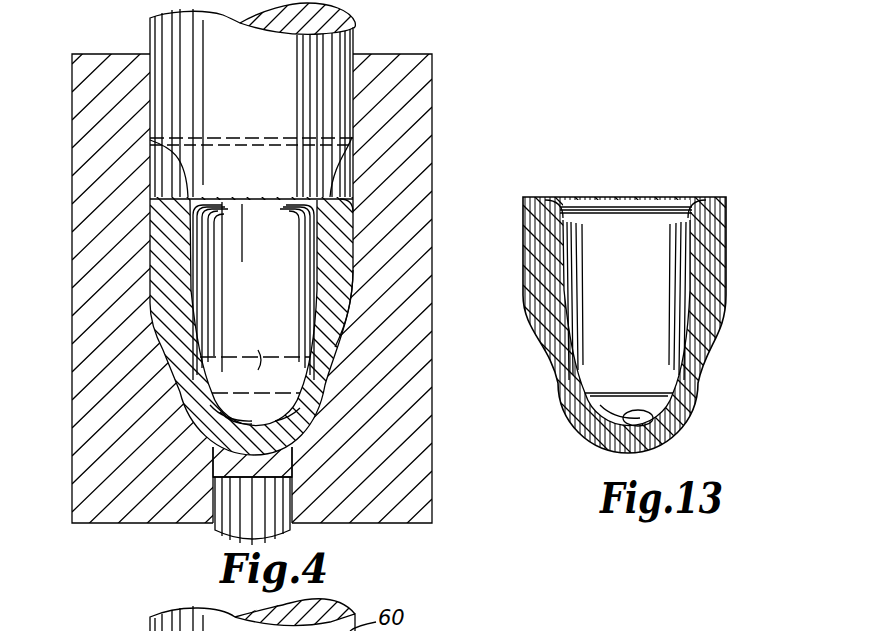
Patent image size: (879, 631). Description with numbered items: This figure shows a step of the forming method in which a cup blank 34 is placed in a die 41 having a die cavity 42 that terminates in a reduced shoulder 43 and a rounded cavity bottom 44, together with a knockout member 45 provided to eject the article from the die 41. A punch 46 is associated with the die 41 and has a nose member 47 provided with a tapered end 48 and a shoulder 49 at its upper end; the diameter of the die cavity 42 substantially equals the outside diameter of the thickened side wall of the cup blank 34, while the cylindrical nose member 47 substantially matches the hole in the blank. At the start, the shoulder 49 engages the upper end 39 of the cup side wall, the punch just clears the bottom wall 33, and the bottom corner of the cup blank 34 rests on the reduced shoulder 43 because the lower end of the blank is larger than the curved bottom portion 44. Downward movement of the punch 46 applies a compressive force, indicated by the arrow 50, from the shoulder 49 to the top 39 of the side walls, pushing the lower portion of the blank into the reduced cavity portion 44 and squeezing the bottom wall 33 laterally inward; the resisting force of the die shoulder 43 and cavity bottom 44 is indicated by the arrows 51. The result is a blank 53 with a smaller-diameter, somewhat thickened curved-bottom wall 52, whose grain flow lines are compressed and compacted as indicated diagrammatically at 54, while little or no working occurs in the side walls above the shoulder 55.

In FIG. 4, the bottom wall 33 is at (255, 371).
In FIG. 4, the cup blank 34 is at (343, 294).
In FIG. 4, the upper end of the cup side wall 39 is at (340, 146).
In FIG. 4, the die 41 is at (415, 241).
In FIG. 4, the die cavity 42 is at (357, 223).
In FIG. 4, the reduced shoulder 43 is at (347, 342).
In FIG. 4, the rounded cavity bottom 44 is at (305, 437).
In FIG. 4, the knockout member 45 is at (278, 489).
In FIG. 4, the punch 46 is at (340, 47).
In FIG. 4, the nose member 47 is at (246, 288).
In FIG. 4, the tapered end 48 is at (205, 364).
In FIG. 4, the shoulder 49 is at (353, 121).
In FIG. 4, the arrow indicating compressive force 50 is at (252, 189).
In FIG. 4, the arrows indicating die resistance force 51 is at (337, 382).
In FIG. 4, the curved-bottom wall 52 is at (207, 430).
In FIG. 13, the curved-bottom wall 52 is at (590, 442).
In FIG. 4, the blank 53 is at (160, 253).
In FIG. 13, the blank 53 is at (722, 300).
In FIG. 13, the compressed grain flow lines 54 is at (686, 428).
In FIG. 4, the shoulder 55 is at (165, 331).
In FIG. 13, the shoulder 55 is at (712, 355).